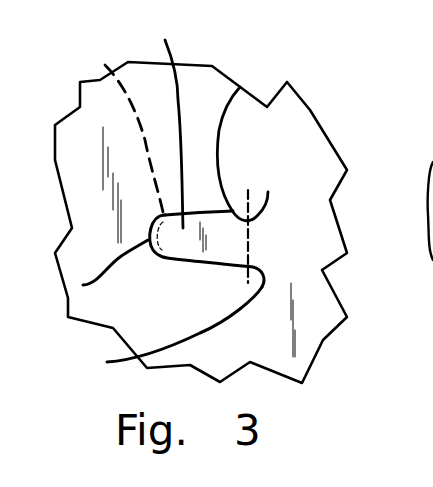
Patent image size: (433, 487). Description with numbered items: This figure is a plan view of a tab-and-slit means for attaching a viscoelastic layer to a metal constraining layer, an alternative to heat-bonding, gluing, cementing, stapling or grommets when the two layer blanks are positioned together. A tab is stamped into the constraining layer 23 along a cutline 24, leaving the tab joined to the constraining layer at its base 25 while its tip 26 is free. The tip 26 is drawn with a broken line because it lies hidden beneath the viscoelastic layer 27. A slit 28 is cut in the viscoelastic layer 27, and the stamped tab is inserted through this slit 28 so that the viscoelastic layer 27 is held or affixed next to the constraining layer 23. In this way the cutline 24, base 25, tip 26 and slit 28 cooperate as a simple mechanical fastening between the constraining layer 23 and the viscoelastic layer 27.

The constraining layer 23 is at (293, 145).
The cutline 24 is at (83, 285).
The base of the tab 25 is at (255, 233).
The tip of the tab 26 is at (105, 65).
The viscoelastic layer 27 is at (165, 40).
The slit 28 is at (240, 87).